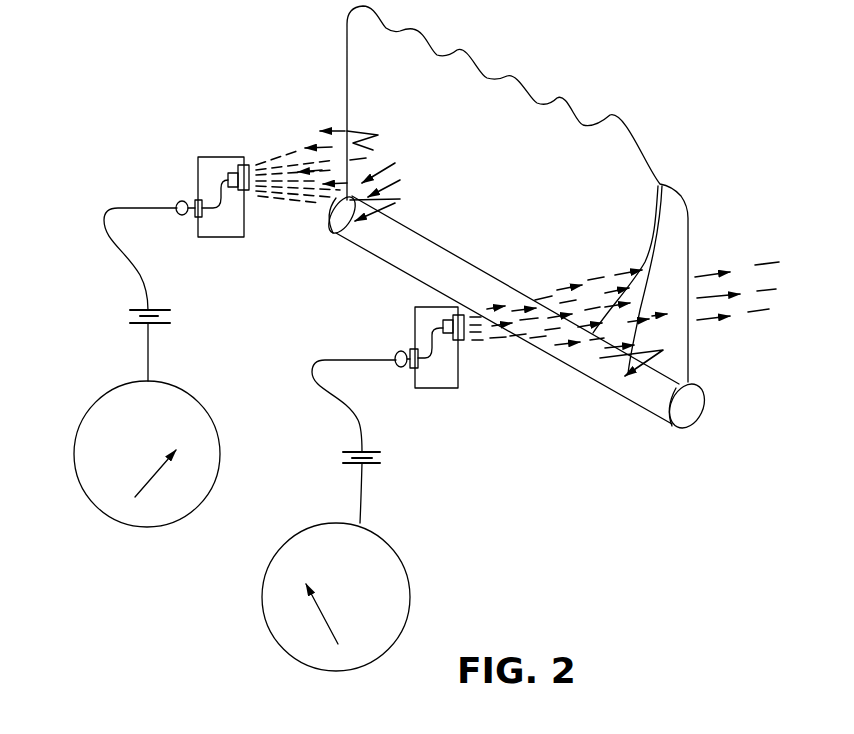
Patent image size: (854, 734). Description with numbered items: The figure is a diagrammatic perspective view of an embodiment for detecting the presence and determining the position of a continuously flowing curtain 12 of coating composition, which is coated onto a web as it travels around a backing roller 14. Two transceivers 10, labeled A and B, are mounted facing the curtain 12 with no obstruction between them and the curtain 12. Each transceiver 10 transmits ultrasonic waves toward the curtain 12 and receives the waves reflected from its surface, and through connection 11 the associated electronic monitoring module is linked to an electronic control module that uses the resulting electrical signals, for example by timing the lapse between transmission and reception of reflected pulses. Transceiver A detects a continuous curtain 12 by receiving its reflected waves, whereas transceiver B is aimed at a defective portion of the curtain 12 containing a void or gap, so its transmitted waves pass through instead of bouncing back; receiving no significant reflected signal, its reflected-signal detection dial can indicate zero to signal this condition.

The transceiver 10 is at (226, 157).
The connection 11 is at (118, 208).
The curtain 12 is at (522, 191).
The backing roller 14 is at (706, 404).